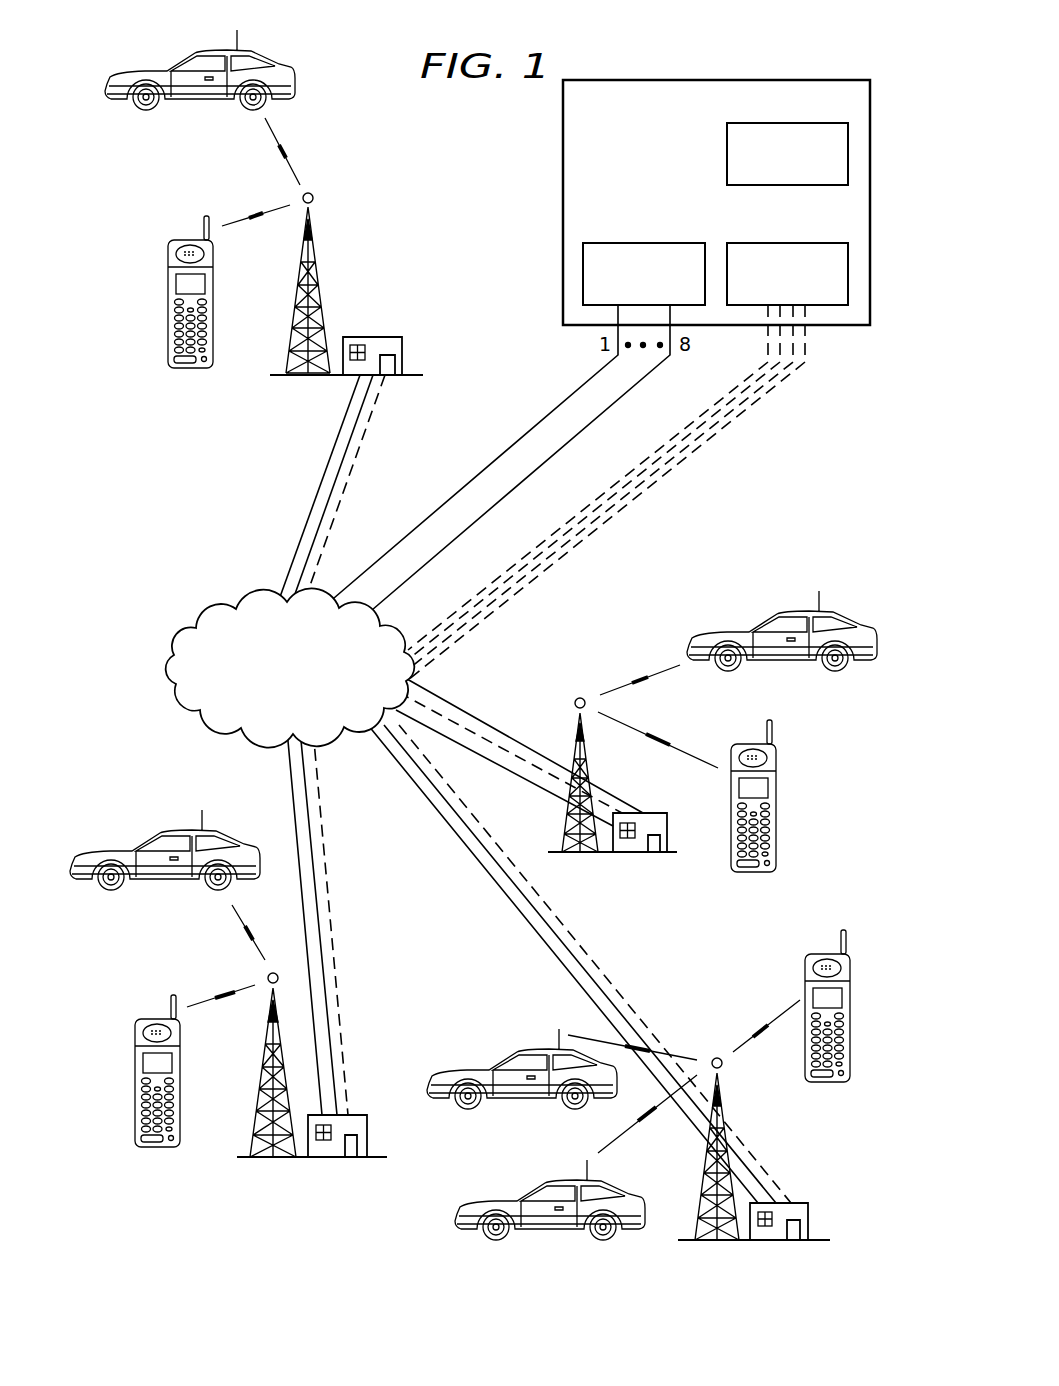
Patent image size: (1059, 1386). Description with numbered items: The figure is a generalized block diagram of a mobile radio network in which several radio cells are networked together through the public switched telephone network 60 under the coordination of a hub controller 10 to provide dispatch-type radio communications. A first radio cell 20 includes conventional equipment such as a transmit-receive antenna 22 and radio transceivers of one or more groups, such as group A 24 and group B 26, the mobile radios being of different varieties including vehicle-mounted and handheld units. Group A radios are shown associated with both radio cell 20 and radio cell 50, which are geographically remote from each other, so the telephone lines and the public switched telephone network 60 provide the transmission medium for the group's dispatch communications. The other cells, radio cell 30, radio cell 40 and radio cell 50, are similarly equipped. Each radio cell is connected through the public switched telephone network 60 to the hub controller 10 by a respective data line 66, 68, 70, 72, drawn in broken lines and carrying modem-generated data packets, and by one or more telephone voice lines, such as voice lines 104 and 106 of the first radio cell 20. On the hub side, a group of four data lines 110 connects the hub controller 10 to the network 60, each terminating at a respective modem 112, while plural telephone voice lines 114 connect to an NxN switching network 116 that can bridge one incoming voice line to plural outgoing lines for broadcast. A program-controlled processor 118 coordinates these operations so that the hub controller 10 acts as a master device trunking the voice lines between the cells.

The hub controller 10 is at (710, 80).
The program-controlled processor 118 is at (727, 156).
The switching network 116 is at (645, 243).
The modems 112 is at (786, 243).
The telephone voice lines 114 is at (563, 398).
The data lines 110 is at (700, 458).
The radio cell 20 is at (322, 246).
The transmit-receive antenna 22 is at (318, 281).
The group A radio transceivers 24 is at (200, 50).
The group B radio transceivers 26 is at (170, 276).
The voice line 104 is at (327, 460).
The voice line 106 is at (308, 543).
The data line 66 is at (363, 440).
The public switched telephone network 60 is at (170, 668).
The radio cell 30 is at (625, 634).
The data line 68 is at (507, 762).
The data line 70 is at (597, 962).
The data line 72 is at (330, 924).
The radio cell 40 is at (217, 1208).
The radio cell 50 is at (853, 1168).